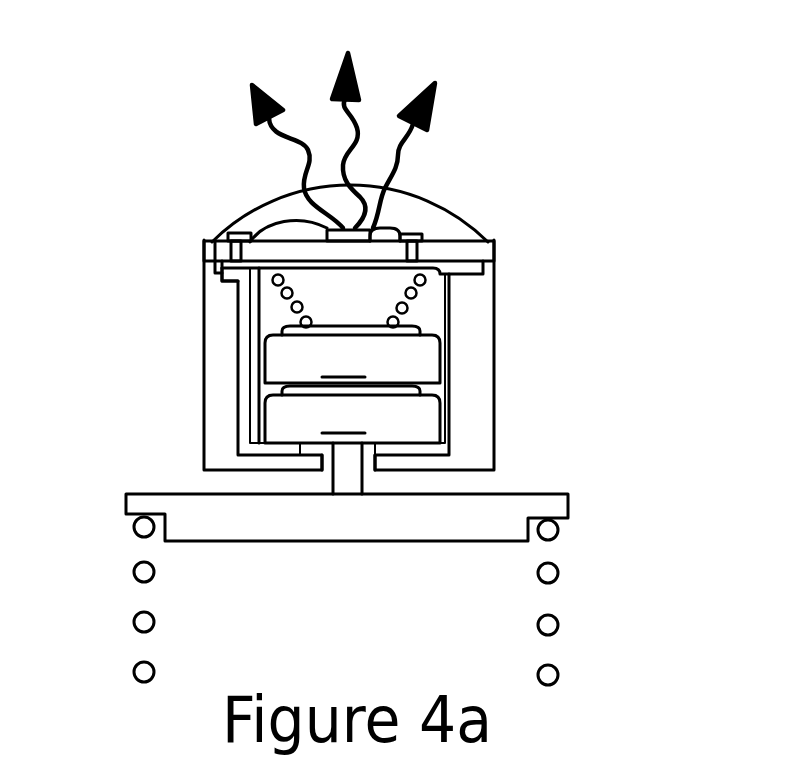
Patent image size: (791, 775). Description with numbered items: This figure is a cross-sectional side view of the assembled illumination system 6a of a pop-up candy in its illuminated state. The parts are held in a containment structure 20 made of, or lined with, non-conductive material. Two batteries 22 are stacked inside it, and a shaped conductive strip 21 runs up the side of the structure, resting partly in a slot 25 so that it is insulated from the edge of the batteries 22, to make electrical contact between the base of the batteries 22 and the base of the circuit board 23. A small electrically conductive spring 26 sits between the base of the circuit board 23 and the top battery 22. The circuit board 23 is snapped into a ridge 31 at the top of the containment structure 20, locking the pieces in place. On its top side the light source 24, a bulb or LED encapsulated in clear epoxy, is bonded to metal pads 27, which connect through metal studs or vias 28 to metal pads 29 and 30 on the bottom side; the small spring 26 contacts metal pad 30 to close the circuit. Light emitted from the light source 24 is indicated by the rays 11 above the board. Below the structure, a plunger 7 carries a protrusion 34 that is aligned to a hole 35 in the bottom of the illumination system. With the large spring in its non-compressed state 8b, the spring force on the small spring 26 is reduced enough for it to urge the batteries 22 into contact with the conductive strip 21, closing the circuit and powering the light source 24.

The illumination system 6a is at (466, 186).
The plunger 7 is at (535, 505).
The non-compressed state of large spring 8b is at (540, 577).
The heat / steam flow 11 is at (360, 125).
The containment structure 20 is at (483, 418).
The conductive strip 21 is at (250, 348).
The batteries 22 is at (352, 384).
The circuit board 23 is at (283, 238).
The light source 24 is at (312, 228).
The slot 25 is at (259, 410).
The small electrically conductive spring 26 is at (395, 290).
The metal pads 27 is at (430, 236).
The metal studs or vias 28 is at (203, 254).
The metal pad 29 is at (224, 280).
The metal pad 30 is at (433, 277).
The ridge 31 is at (497, 243).
The protrusion 34 is at (348, 494).
The hole 35 is at (330, 473).